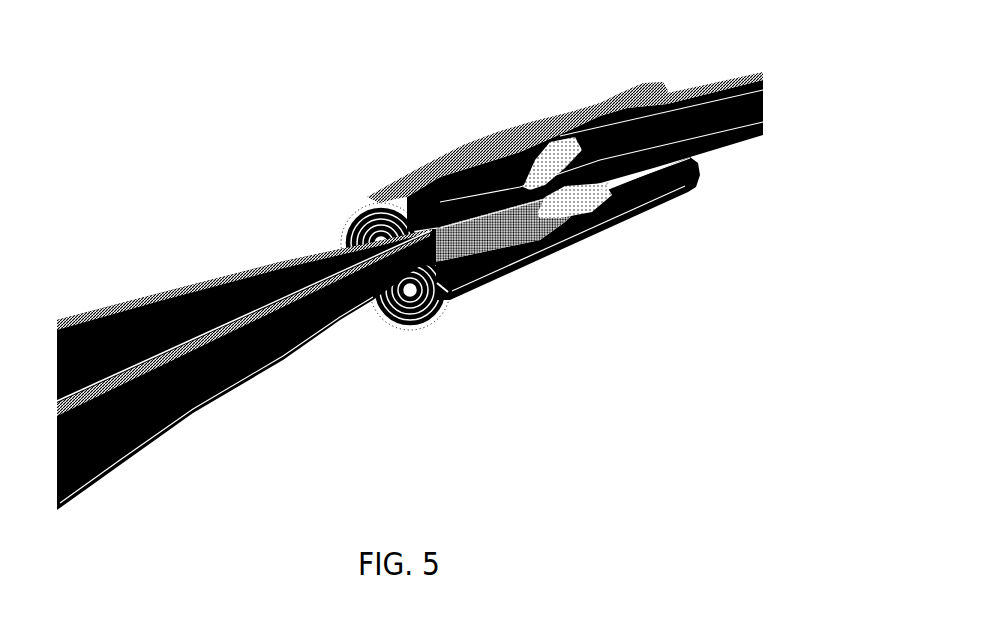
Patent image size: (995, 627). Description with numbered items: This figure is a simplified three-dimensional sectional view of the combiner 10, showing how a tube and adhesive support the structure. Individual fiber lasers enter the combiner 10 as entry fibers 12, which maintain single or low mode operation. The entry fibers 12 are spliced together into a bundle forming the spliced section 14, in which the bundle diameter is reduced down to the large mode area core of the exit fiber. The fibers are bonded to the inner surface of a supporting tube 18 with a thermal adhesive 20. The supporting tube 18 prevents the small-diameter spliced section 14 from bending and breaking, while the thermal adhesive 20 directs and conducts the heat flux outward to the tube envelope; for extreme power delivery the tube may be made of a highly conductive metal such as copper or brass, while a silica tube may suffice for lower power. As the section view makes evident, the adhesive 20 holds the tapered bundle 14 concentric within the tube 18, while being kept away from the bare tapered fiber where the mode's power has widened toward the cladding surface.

The combiner 10 is at (410, 291).
The entry fibers 12 is at (197, 413).
The spliced section 14 is at (550, 253).
The supporting tube 18 is at (627, 218).
The thermal adhesive 20 is at (460, 303).